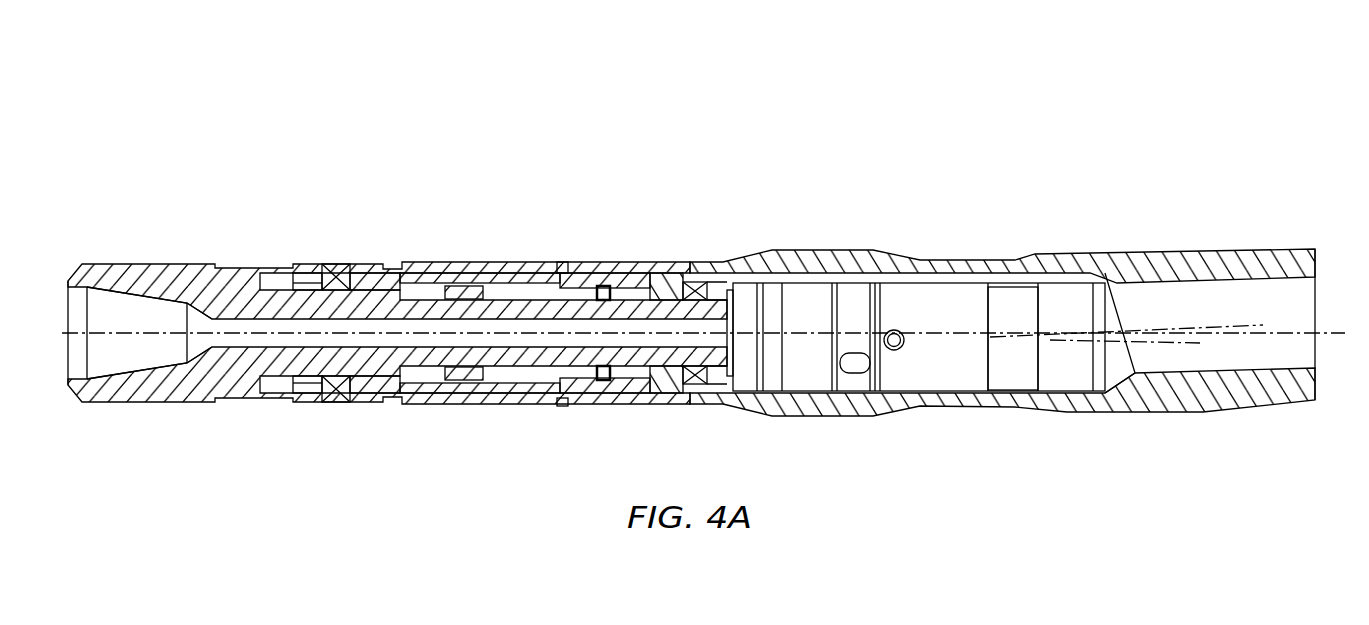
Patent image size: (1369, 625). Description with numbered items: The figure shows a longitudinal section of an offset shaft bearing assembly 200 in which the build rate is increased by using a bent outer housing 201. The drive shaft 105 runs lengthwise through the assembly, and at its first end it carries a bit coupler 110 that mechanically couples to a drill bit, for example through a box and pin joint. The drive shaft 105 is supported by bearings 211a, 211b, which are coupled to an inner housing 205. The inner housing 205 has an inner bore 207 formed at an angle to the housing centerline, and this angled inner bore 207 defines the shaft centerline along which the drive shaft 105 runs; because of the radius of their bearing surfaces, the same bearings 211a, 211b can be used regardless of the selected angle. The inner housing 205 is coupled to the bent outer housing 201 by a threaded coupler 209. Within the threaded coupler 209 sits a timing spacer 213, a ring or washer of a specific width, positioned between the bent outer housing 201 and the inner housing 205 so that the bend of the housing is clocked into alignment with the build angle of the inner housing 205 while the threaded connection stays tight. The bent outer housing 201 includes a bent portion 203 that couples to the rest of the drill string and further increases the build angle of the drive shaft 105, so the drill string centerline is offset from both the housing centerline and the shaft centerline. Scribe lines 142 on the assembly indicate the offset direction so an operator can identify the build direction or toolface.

The offset shaft bearing assembly 200 is at (257, 76).
The drive shaft 105 is at (247, 265).
The bit coupler 110 is at (122, 300).
The scribe line 142 is at (390, 265).
The bearing 211a is at (262, 267).
The bearing 211b is at (608, 280).
The inner housing 205 is at (542, 265).
The inner bore 207 is at (590, 272).
The threaded coupler 209 is at (612, 398).
The timing spacer 213 is at (563, 407).
The bent portion 203 is at (1315, 280).
The bent outer housing 201 is at (930, 266).